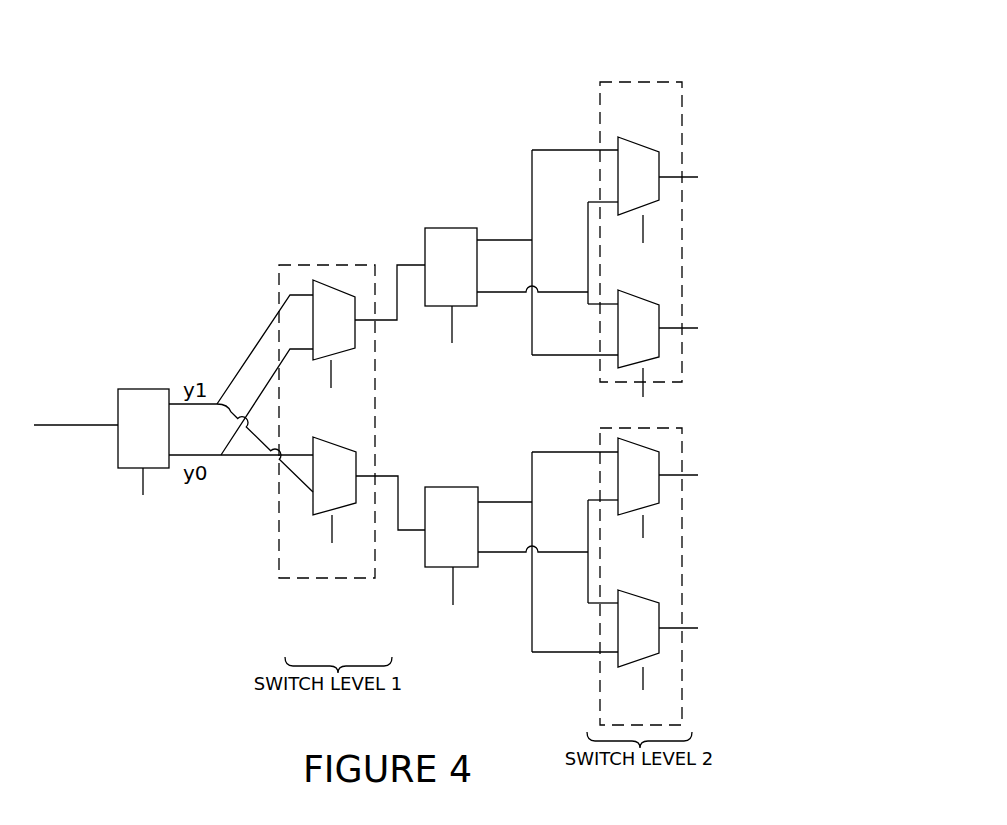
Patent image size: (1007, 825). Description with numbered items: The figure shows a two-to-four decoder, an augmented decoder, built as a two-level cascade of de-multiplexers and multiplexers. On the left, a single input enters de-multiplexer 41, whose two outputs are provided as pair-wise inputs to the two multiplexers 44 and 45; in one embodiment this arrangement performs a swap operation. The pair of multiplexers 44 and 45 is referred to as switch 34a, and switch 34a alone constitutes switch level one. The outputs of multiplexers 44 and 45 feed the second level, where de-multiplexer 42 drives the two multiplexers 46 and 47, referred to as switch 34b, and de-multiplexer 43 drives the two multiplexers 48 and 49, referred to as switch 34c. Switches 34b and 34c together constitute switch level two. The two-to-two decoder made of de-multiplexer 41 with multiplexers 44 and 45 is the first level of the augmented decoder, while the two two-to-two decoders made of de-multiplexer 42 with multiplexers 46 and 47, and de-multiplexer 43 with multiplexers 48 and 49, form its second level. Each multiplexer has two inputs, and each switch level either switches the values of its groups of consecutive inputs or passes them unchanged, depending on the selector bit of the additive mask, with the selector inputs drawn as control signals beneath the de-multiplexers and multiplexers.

The de-multiplexer 41 is at (137, 380).
The de-multiplexer 42 is at (462, 222).
The de-multiplexer 43 is at (421, 570).
The multiplexer 44 is at (311, 274).
The multiplexer 45 is at (309, 508).
The multiplexer 46 is at (660, 144).
The multiplexer 47 is at (663, 309).
The multiplexer 48 is at (614, 437).
The multiplexer 49 is at (663, 600).
The switch 34a is at (361, 257).
The switch 34b is at (686, 382).
The switch 34c is at (687, 519).